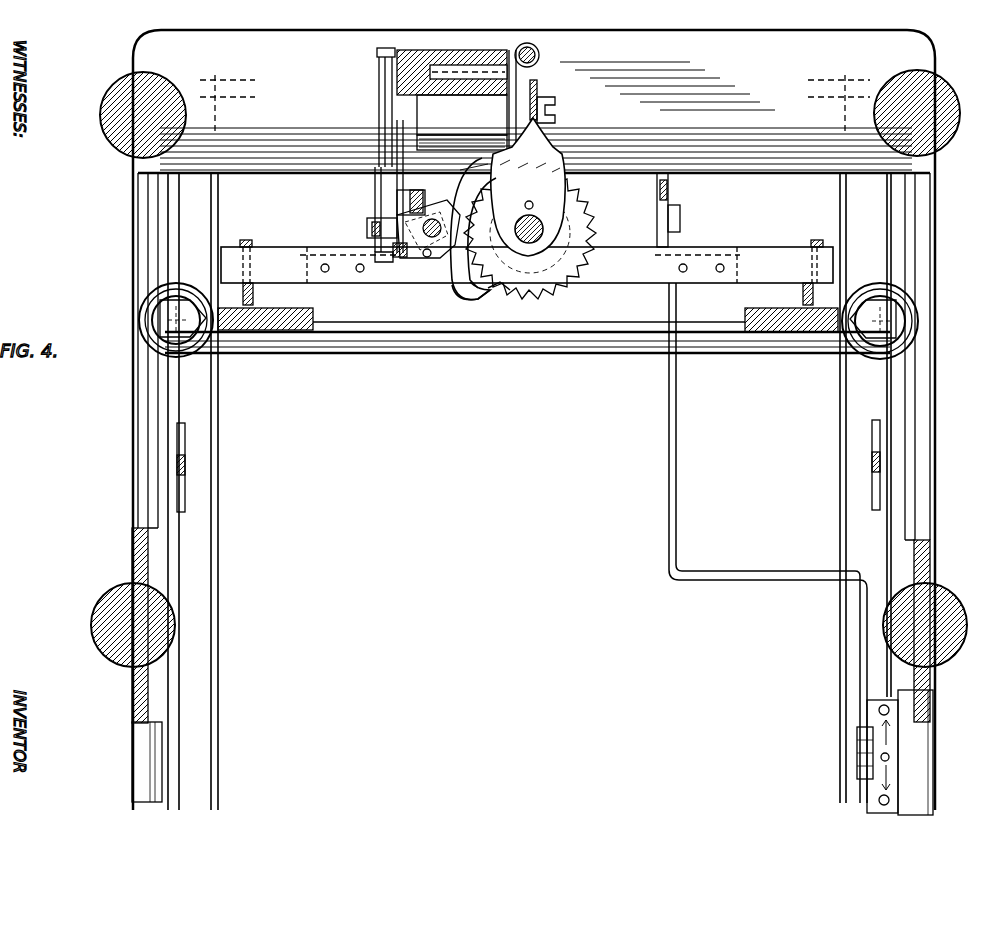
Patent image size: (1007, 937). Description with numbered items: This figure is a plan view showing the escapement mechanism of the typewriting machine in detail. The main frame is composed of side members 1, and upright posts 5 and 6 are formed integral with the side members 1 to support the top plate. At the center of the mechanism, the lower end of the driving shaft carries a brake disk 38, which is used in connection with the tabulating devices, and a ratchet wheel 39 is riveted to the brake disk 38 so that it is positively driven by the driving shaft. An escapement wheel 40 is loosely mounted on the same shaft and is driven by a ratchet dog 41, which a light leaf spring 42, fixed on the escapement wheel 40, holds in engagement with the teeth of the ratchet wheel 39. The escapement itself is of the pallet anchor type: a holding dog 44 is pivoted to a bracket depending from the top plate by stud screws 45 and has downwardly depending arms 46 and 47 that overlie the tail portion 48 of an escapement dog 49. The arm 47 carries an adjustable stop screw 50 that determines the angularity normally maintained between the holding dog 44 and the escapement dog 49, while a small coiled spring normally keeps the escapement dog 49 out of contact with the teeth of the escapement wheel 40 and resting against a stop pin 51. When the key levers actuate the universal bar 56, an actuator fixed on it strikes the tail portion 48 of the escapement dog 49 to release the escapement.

The side members 1 is at (135, 447).
The upright posts 5 is at (98, 616).
The upright posts 6 is at (108, 140).
The brake disk 38 is at (528, 187).
The ratchet wheel 39 is at (560, 228).
The escapement wheel 40 is at (578, 196).
The ratchet dog 41 is at (470, 190).
The leaf spring 42 is at (500, 290).
The holding dog 44 is at (376, 188).
The stud screws 45 is at (367, 228).
The downwardly depending arm 46 is at (397, 205).
The downwardly depending arm 47 is at (400, 258).
The tail portion 48 is at (388, 250).
The escapement dog 49 is at (463, 297).
The adjustable stop screw 50 is at (418, 256).
The stop pin 51 is at (428, 258).
The universal bar 56 is at (746, 252).